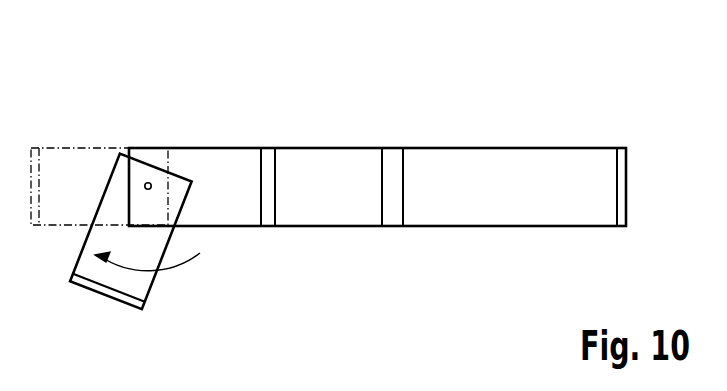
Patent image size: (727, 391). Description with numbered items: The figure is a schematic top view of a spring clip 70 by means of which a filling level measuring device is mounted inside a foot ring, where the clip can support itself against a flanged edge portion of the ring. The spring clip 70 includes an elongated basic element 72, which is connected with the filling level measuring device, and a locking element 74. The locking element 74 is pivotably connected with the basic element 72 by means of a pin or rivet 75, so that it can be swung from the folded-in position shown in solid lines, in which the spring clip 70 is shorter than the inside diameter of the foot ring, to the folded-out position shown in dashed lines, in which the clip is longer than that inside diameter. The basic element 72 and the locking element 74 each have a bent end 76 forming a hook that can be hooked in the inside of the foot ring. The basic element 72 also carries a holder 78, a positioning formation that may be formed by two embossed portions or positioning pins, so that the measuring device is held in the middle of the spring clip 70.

The spring clip 70 is at (592, 88).
The basic element 72 is at (510, 158).
The locking element 74 is at (142, 285).
The pin or rivet 75 is at (147, 182).
The bent end 76 is at (622, 192).
The holder 78 is at (327, 158).